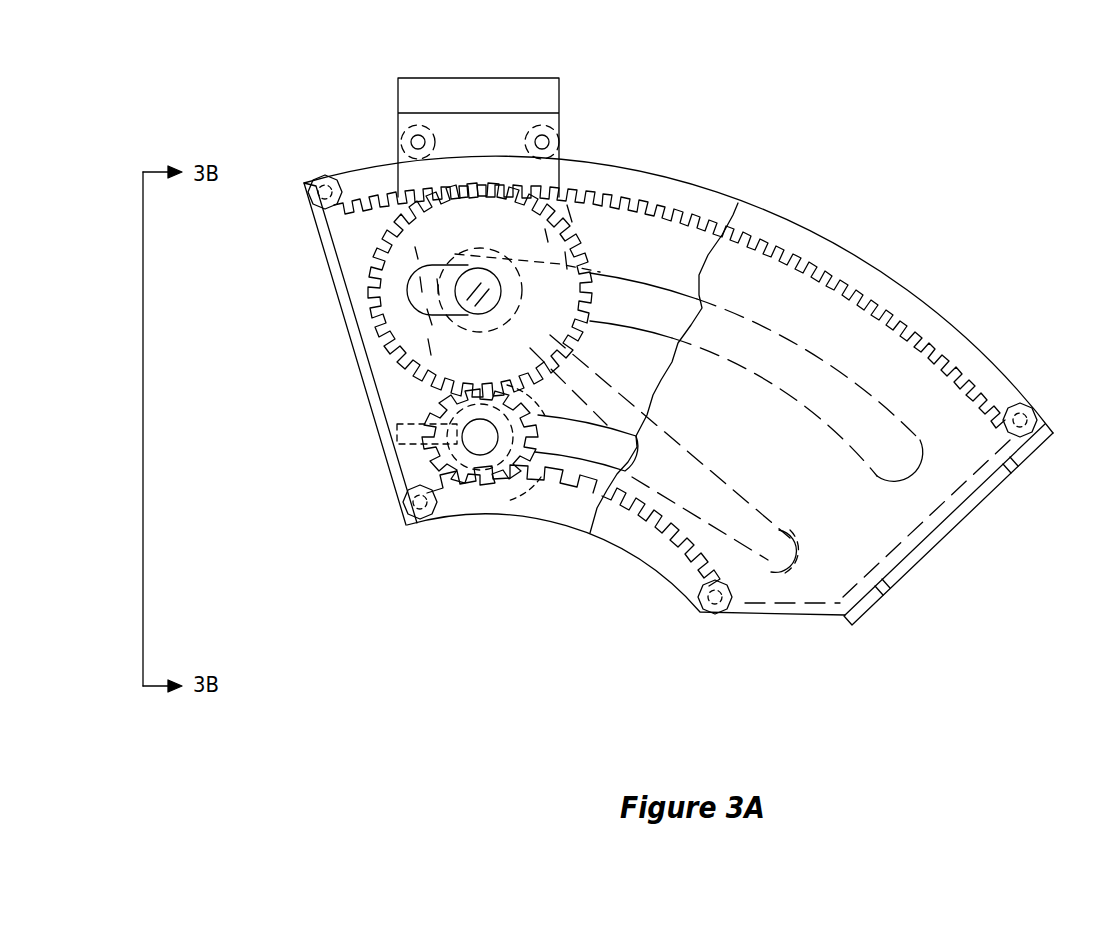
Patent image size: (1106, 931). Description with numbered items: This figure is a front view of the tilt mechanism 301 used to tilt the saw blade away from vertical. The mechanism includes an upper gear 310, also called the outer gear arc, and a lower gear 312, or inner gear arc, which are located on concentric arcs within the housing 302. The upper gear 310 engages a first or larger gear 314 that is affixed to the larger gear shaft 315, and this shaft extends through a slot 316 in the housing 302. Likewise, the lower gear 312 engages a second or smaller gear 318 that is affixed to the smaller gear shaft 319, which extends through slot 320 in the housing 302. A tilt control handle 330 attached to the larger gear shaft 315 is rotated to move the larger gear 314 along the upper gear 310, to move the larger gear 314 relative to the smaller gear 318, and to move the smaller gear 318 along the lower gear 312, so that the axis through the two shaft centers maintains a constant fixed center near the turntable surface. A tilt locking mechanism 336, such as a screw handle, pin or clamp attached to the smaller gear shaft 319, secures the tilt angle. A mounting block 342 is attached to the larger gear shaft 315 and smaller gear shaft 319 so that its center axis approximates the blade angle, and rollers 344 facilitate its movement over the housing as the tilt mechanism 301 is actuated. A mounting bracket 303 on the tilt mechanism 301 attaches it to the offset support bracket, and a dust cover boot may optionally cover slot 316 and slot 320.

The tilt mechanism 301 is at (823, 240).
The housing 302 is at (863, 519).
The mounting bracket 303 is at (933, 547).
The upper gear 310 is at (905, 318).
The lower gear 312 is at (663, 535).
The larger gear 314 is at (584, 266).
The larger gear shaft 315 is at (484, 266).
The slot 316 is at (797, 347).
The smaller gear 318 is at (432, 445).
The smaller gear shaft 319 is at (480, 440).
The slot 320 is at (790, 577).
The tilt control handle 330 is at (688, 445).
The tilt locking mechanism 336 is at (407, 423).
The mounting block 342 is at (400, 122).
The rollers 344 is at (530, 130).